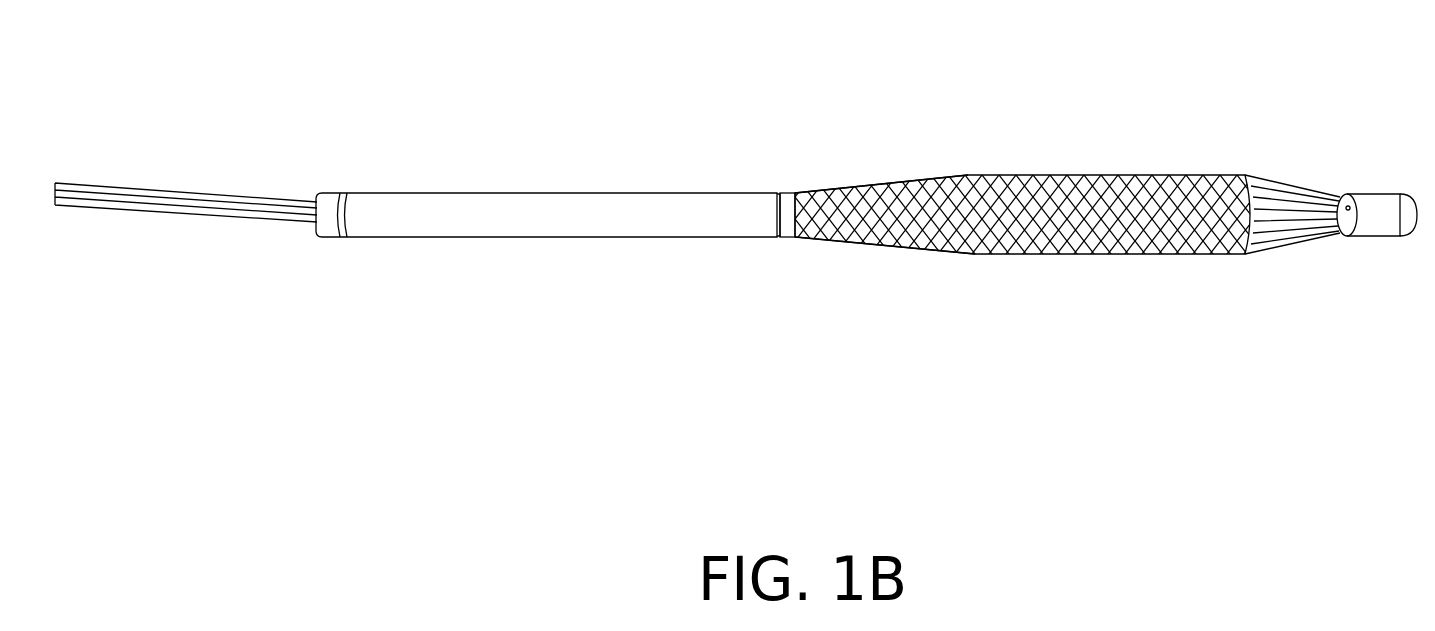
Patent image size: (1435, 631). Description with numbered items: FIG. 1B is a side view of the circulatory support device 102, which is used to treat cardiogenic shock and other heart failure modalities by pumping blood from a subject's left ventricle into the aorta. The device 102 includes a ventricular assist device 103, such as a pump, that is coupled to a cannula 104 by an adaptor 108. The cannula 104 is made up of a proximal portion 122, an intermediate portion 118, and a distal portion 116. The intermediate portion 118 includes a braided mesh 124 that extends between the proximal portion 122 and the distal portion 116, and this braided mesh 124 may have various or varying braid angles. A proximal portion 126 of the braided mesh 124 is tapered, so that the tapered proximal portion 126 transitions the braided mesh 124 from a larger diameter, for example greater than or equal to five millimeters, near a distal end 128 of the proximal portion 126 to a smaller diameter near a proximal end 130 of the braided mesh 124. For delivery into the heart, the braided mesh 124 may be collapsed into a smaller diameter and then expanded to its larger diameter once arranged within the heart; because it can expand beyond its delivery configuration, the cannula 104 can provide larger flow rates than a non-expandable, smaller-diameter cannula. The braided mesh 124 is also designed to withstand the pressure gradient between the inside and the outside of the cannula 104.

The circulatory support device 102 is at (262, 85).
The ventricular assist device 103 is at (768, 121).
The cannula 104 is at (1417, 121).
The adaptor 108 is at (797, 302).
The distal portion 116 is at (1418, 300).
The intermediate portion 118 is at (1248, 300).
The proximal portion 122 is at (773, 176).
The braided mesh 124 is at (976, 240).
The tapered proximal portion 126 is at (968, 173).
The distal end 128 is at (1025, 176).
The proximal end 130 is at (768, 247).